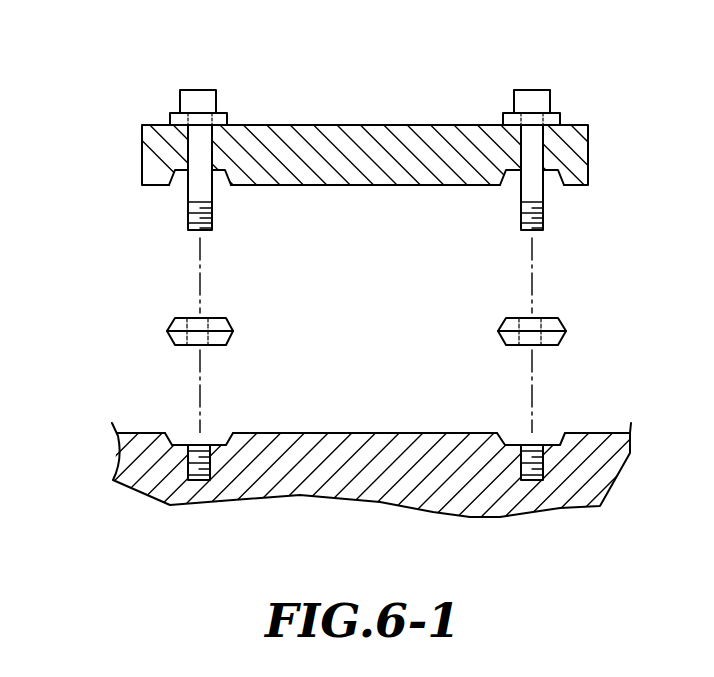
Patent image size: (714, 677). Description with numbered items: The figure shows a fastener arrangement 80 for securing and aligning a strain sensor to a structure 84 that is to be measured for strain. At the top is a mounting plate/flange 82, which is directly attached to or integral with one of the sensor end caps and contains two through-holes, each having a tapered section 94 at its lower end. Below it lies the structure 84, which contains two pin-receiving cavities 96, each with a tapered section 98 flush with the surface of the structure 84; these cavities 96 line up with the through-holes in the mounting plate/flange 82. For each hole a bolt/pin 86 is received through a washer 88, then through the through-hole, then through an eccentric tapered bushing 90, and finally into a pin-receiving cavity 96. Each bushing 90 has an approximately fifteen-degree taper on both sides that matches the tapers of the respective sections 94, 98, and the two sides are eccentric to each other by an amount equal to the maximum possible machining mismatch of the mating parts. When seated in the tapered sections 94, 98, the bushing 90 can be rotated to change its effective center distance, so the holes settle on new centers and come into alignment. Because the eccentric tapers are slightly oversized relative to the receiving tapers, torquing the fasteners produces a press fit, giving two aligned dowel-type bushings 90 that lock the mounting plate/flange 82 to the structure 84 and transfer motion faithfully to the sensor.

The fastener assembly 80 is at (91, 74).
The mounting plate/flange 82 is at (378, 156).
The structure 84 is at (350, 471).
The bolt/pin 86 is at (200, 90).
The washer 88 is at (227, 122).
The eccentric tapered bushing 90 is at (233, 328).
The tapered section 94 is at (178, 187).
The pin-receiving cavity 96 is at (206, 458).
The tapered section 98 is at (181, 442).